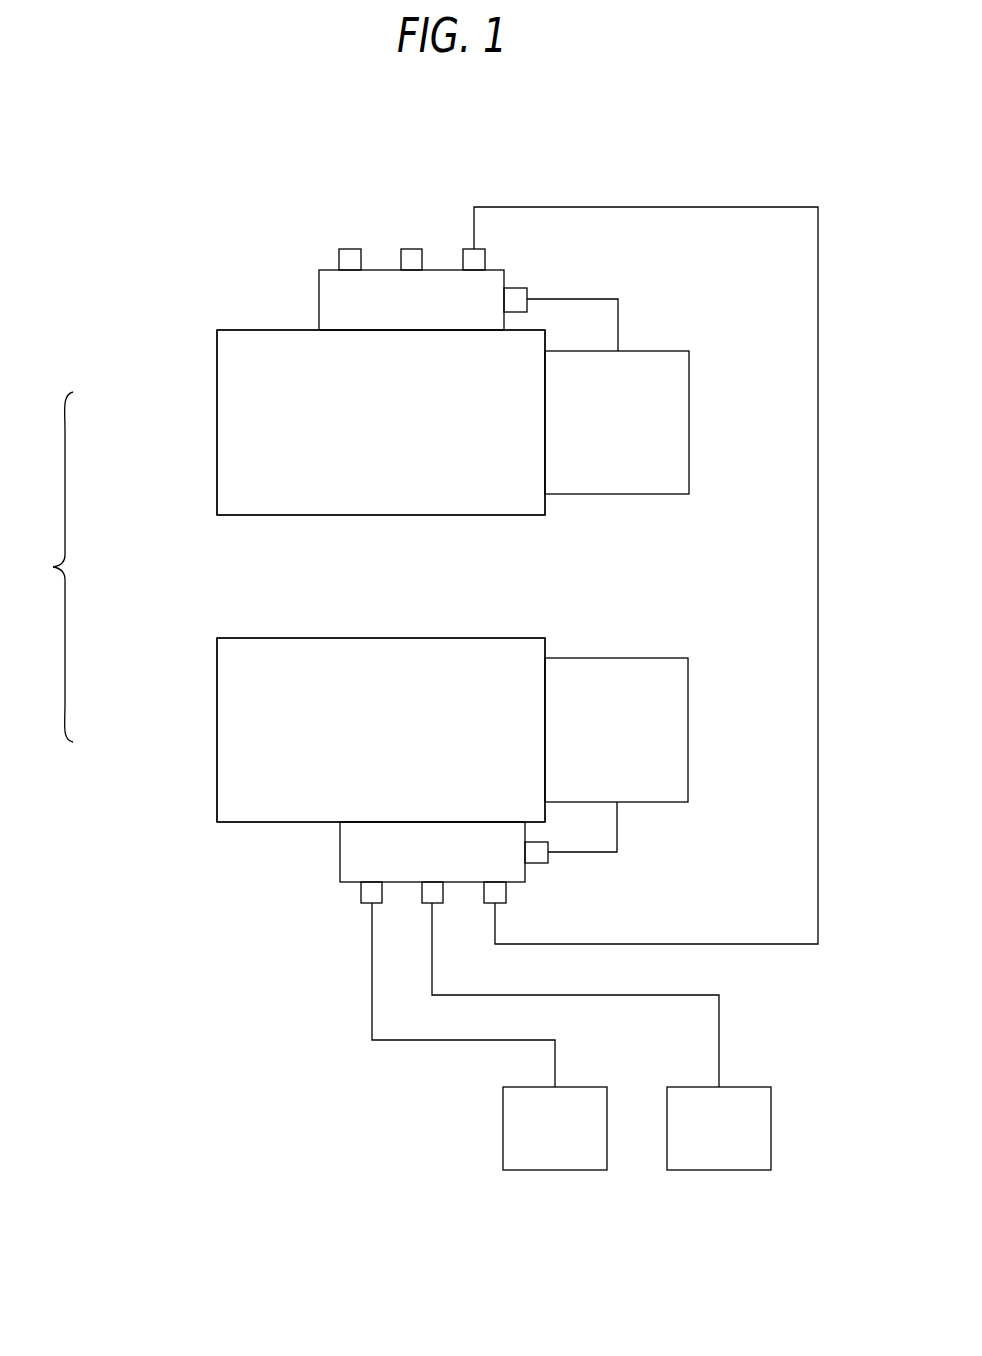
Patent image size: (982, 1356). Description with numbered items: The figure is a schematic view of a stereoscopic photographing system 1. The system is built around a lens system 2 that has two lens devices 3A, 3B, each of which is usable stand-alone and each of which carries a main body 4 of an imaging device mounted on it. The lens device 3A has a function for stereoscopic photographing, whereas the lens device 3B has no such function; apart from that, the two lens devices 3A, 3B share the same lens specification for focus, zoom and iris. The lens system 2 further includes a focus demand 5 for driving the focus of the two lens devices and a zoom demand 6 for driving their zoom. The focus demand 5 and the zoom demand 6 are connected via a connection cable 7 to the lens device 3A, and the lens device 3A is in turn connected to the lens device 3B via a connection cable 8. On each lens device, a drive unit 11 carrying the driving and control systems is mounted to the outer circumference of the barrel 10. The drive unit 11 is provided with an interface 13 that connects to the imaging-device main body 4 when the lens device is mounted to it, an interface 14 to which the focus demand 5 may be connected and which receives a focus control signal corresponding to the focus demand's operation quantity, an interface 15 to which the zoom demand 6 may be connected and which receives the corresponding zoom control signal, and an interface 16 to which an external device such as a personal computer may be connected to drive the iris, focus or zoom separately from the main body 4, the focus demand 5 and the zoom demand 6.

The stereoscopic photographing system 1 is at (163, 163).
The lens system 2 is at (47, 567).
The lens device 3A is at (203, 728).
The lens device 3B is at (203, 421).
The main body of imaging device 4 is at (689, 423).
The focus demand 5 is at (558, 1170).
The zoom demand 6 is at (718, 1170).
The connection cable 7 is at (418, 1040).
The connection cable 8 is at (818, 882).
The barrel 10 is at (380, 515).
The drive unit 11 is at (319, 302).
The interface 13 is at (508, 288).
The interface 14 is at (352, 248).
The interface 15 is at (411, 248).
The interface 16 is at (485, 258).